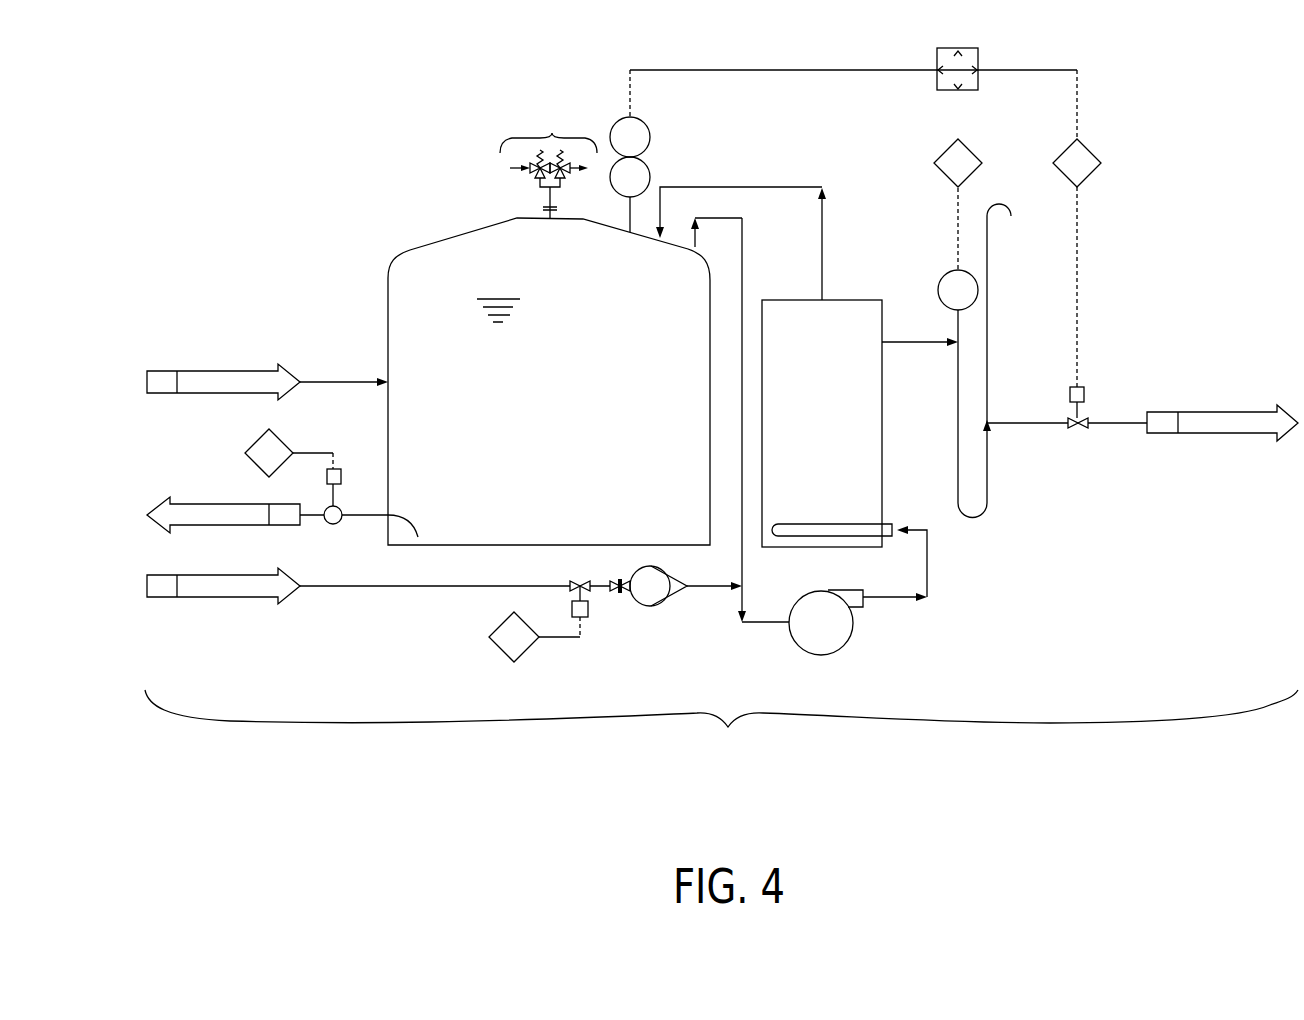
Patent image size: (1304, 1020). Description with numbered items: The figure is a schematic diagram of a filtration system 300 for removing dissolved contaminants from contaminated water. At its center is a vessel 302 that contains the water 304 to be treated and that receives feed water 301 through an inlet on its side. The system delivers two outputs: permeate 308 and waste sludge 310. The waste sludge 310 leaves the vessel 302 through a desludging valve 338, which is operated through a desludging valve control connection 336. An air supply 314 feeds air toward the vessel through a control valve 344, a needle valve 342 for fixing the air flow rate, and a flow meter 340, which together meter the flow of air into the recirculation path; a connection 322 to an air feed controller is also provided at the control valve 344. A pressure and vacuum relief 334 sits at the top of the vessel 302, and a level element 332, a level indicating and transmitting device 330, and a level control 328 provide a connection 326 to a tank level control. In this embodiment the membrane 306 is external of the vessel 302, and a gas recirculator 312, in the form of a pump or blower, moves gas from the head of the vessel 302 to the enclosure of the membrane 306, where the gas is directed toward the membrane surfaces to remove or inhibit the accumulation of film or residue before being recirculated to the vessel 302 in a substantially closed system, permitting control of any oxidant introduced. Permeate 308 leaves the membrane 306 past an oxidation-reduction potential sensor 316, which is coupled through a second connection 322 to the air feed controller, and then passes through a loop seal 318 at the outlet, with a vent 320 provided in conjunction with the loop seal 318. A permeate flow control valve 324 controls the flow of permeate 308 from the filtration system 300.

The filtration system 300 is at (721, 726).
The feed water 301 is at (267, 382).
The vessel 302 is at (490, 545).
The water 304 is at (517, 306).
The membrane 306 is at (805, 438).
The permeate 308 is at (1222, 423).
The waste sludge 310 is at (267, 515).
The gas recirculator 312 is at (838, 621).
The air supply 314 is at (378, 586).
The oxidation-reduction potential (ORP) sensor 316 is at (940, 288).
The loop seal 318 is at (968, 516).
The vent 320 is at (1014, 212).
The connection to an air feed controller 322 is at (512, 615).
The permeate flow control valve 324 is at (1084, 420).
The connection to a tank level control 326 is at (1101, 163).
The level control 328 is at (970, 90).
The level indicating and transmitting device 330 is at (650, 135).
The level element 332 is at (650, 175).
The pressure and vacuum relief 334 is at (548, 162).
The desludging valve control connection 336 is at (257, 438).
The desludging valve 338 is at (341, 477).
The flow meter 340 is at (662, 570).
The needle valve 342 is at (624, 606).
The control valve 344 is at (588, 612).